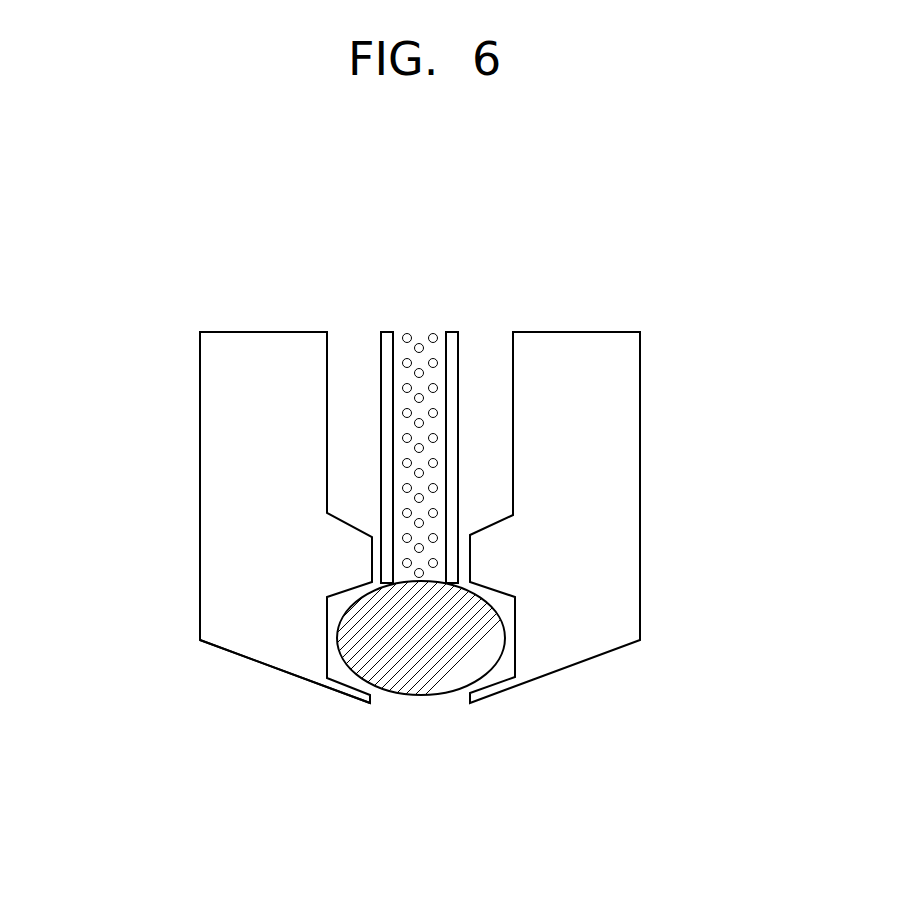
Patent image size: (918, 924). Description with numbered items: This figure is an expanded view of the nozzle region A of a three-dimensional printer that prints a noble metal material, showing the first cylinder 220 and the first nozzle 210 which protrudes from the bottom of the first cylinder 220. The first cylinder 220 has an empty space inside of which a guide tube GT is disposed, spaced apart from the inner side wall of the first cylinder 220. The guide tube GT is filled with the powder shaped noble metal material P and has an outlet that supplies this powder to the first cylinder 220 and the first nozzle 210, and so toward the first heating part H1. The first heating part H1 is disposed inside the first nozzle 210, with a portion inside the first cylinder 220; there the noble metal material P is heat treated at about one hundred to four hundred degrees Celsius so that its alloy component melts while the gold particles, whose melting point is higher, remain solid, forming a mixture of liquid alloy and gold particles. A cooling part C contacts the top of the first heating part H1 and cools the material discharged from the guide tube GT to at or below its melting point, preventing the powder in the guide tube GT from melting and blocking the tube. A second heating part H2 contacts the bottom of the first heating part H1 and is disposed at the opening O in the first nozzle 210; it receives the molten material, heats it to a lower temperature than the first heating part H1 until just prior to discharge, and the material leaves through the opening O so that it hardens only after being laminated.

The first cylinder 220 is at (200, 570).
The first nozzle 210 is at (237, 655).
The guide tube GT is at (387, 332).
The powder shaped noble metal material P is at (407, 335).
The opening O is at (373, 702).
The nozzle region A is at (587, 227).
The cooling part C is at (470, 535).
The first heating part H1 is at (470, 693).
The second heating part H2 is at (470, 703).